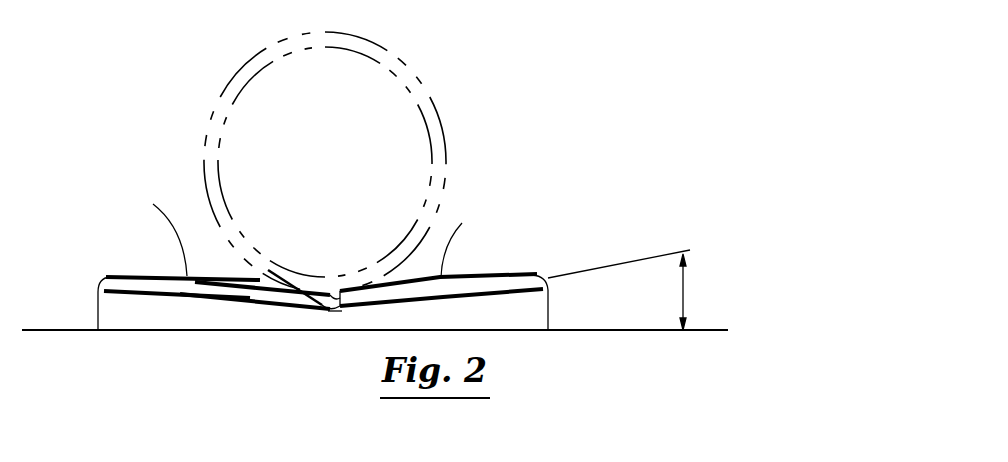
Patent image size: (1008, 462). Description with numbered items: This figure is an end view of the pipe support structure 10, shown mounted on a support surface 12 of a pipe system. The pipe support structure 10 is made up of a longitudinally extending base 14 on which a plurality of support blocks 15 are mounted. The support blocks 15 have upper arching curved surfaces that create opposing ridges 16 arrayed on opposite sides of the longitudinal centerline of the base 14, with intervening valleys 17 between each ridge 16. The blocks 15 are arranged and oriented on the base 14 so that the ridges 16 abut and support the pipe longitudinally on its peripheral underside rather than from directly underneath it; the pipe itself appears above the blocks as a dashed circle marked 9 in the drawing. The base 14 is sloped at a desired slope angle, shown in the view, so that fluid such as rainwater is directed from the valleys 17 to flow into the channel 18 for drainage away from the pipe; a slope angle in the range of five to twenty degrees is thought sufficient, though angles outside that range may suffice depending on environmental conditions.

The ball 9 is at (408, 68).
The pipe support structure 10 is at (516, 204).
The support surface 12 is at (582, 330).
The base 14 is at (120, 300).
The support blocks 15 is at (308, 232).
The ridges 16 is at (482, 280).
The valleys 17 is at (158, 299).
The channel 18 is at (282, 311).